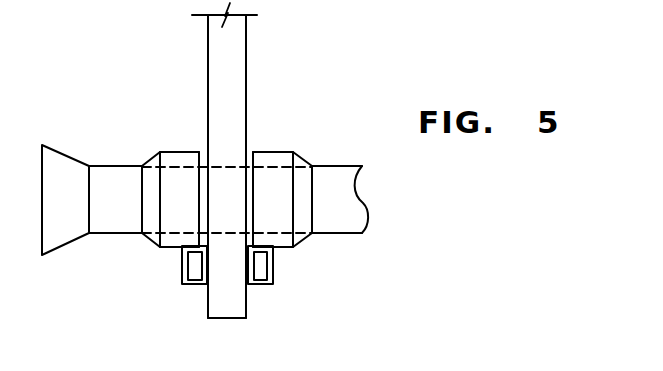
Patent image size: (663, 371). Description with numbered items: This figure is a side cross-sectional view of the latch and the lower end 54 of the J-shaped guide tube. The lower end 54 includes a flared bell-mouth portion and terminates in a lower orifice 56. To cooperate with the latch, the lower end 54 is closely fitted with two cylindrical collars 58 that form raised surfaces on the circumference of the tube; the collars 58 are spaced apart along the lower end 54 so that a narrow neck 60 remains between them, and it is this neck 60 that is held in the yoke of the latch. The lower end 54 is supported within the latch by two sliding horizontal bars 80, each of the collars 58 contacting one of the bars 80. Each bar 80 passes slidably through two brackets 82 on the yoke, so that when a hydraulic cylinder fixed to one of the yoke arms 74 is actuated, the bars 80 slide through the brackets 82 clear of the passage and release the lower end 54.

The lower end of J-tube 54 is at (348, 233).
The lower orifice 56 is at (42, 145).
The cylindrical collars 58 is at (160, 152).
The neck 60 is at (248, 165).
The yoke arm 74 is at (241, 38).
The sliding horizontal bars 80 is at (193, 272).
The brackets 82 is at (182, 257).